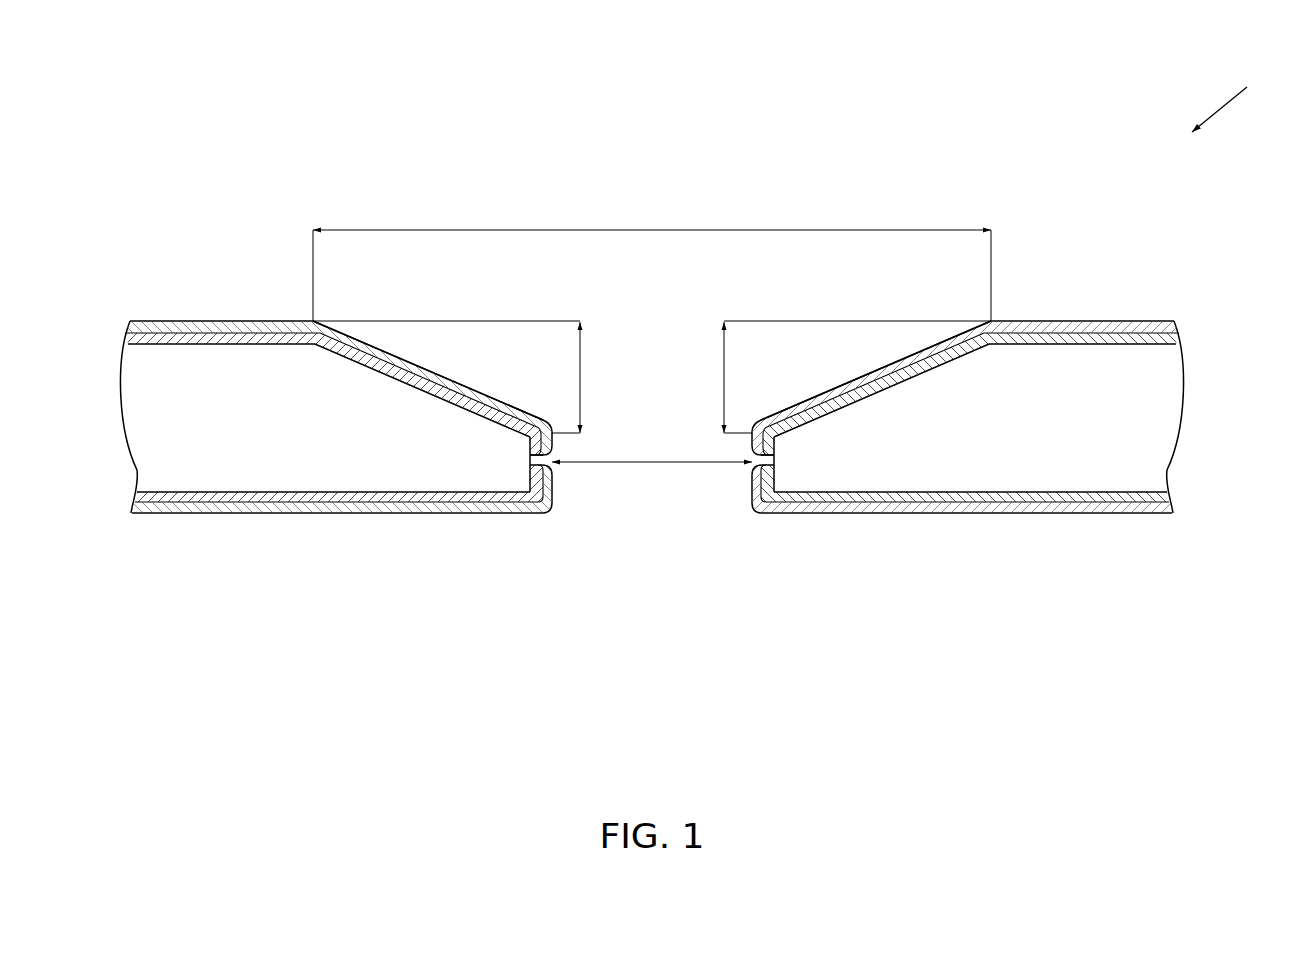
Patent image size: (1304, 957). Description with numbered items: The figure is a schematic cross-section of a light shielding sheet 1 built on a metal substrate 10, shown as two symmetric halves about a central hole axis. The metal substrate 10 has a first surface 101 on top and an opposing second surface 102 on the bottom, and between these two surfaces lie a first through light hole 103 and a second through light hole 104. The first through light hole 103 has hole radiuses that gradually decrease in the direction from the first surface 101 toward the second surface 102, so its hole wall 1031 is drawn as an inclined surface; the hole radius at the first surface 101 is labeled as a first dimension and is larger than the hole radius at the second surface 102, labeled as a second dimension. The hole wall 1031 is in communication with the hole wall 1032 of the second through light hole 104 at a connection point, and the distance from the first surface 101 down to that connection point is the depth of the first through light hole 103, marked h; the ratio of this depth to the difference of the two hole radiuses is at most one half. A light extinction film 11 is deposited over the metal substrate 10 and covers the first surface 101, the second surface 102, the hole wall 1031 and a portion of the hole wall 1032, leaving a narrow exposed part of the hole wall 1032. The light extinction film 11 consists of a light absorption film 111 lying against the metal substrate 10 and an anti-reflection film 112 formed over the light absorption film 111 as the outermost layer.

The light shielding sheet 1 is at (1226, 100).
The metal substrate 10 is at (173, 418).
The first surface 101 is at (652, 336).
The second surface 102 is at (163, 492).
The first through light hole 103 is at (660, 374).
The hole wall 1031 is at (428, 396).
The hole wall 1032 is at (530, 466).
The second through light hole 104 is at (660, 479).
The light extinction film 11 is at (652, 336).
The light absorption film 111 is at (275, 262).
The anti-reflection film 112 is at (245, 328).